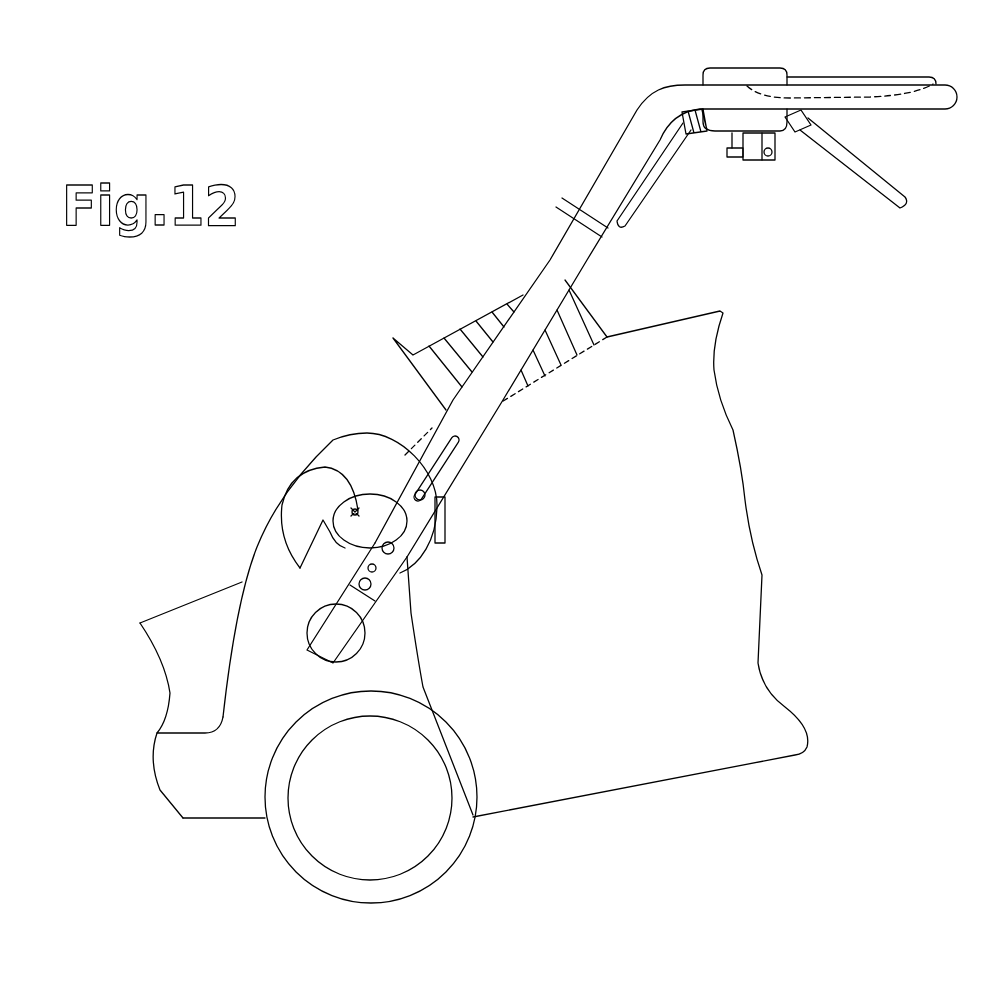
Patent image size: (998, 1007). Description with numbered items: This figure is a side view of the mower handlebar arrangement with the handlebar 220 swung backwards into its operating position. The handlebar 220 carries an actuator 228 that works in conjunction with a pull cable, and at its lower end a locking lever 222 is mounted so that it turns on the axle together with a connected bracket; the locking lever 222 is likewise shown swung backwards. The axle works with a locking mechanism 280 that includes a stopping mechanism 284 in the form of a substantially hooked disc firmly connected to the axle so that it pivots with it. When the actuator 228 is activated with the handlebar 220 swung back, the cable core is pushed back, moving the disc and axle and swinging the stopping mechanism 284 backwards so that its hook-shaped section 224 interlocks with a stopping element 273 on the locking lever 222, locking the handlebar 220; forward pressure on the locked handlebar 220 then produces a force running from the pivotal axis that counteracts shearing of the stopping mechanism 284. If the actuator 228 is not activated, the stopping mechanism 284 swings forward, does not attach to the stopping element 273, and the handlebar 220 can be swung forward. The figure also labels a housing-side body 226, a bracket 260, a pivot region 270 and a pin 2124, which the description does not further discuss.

The handlebar 220 is at (572, 246).
The locking lever 222 is at (347, 433).
The hook-shaped section 224 is at (587, 307).
The housing 226 is at (663, 637).
The actuator 228 is at (838, 77).
The bracket 260 is at (432, 540).
The pivot assembly 270 is at (300, 590).
The stopping element 273 is at (395, 652).
The locking mechanism 280 is at (298, 512).
The stopping mechanism 284 is at (335, 452).
The pivot pin 2124 is at (400, 572).